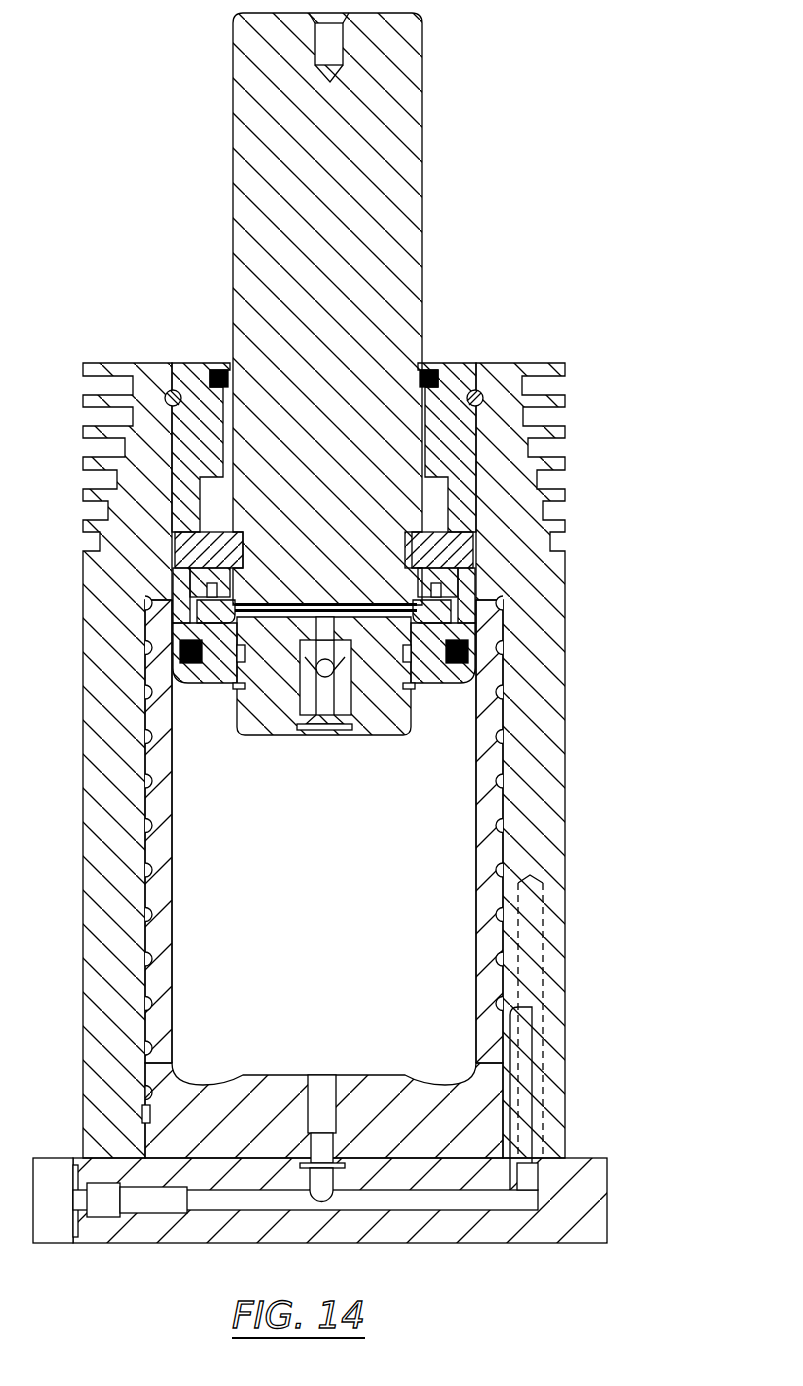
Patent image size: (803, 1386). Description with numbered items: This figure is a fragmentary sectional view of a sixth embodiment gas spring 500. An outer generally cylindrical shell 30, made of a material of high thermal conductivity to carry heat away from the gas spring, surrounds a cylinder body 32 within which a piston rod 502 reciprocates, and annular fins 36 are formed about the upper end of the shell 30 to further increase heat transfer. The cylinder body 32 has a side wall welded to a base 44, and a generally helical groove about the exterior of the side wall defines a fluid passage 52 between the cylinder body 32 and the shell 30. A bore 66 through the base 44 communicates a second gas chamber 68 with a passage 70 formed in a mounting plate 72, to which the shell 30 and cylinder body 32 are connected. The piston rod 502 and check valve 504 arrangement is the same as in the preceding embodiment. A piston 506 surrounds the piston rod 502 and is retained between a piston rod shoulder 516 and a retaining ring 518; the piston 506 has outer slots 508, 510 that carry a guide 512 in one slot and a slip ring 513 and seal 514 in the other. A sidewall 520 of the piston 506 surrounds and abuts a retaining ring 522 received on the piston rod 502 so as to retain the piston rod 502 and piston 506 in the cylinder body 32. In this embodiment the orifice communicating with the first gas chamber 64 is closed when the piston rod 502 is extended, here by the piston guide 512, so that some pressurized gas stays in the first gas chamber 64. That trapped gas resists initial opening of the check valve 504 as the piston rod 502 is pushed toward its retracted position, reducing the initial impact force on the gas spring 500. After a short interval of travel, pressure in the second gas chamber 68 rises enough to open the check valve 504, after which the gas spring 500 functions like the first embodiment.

The sixth embodiment gas spring 500 is at (325, 644).
The piston rod 502 is at (420, 178).
The check valve 504 is at (318, 752).
The piston 506 is at (416, 690).
The outer slot 508 is at (186, 626).
The outer slot 510 is at (180, 658).
The guide 512 is at (182, 607).
The slip ring 513 is at (476, 653).
The seal 514 is at (188, 686).
The piston rod shoulder 516 is at (422, 627).
The retaining ring 518 is at (413, 740).
The sidewall 520 is at (478, 562).
The retaining ring 522 is at (462, 540).
The first gas chamber 64 is at (440, 610).
The bore 66 is at (325, 1080).
The second gas chamber 68 is at (205, 907).
The passage 70 is at (432, 1208).
The mounting plate 72 is at (527, 1238).
The shell 30 is at (353, 768).
The cylinder body 32 is at (490, 848).
The annular fins 36 is at (565, 382).
The base 44 is at (376, 1082).
The fluid passage 52 is at (500, 790).